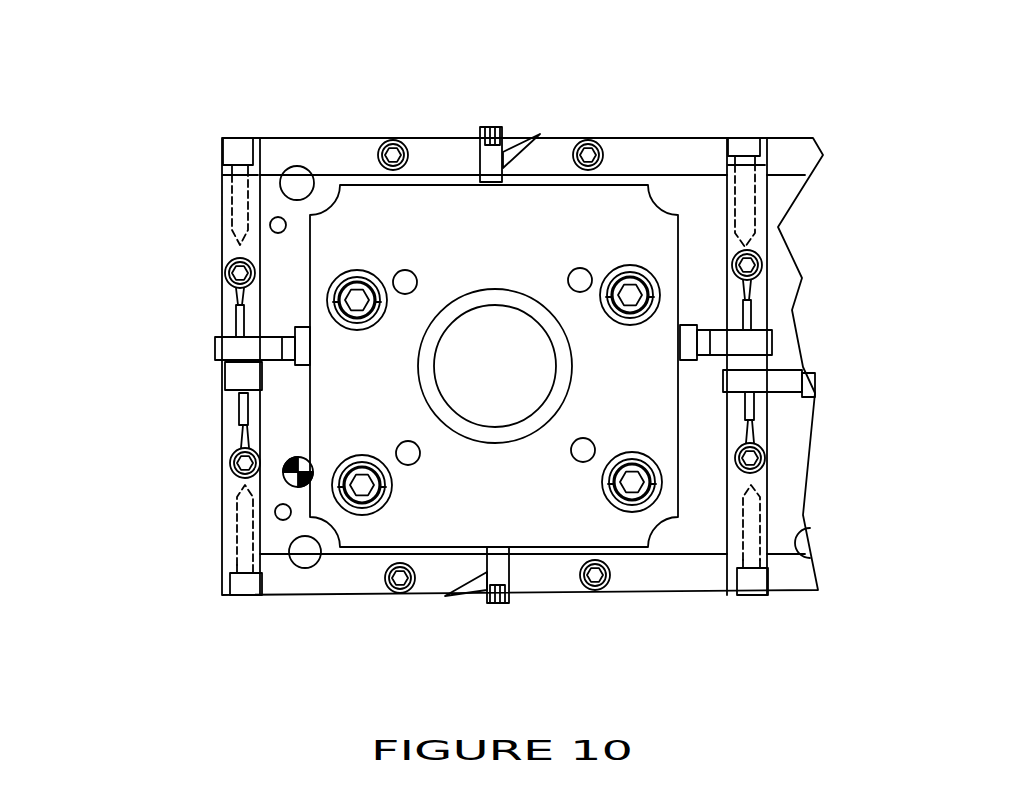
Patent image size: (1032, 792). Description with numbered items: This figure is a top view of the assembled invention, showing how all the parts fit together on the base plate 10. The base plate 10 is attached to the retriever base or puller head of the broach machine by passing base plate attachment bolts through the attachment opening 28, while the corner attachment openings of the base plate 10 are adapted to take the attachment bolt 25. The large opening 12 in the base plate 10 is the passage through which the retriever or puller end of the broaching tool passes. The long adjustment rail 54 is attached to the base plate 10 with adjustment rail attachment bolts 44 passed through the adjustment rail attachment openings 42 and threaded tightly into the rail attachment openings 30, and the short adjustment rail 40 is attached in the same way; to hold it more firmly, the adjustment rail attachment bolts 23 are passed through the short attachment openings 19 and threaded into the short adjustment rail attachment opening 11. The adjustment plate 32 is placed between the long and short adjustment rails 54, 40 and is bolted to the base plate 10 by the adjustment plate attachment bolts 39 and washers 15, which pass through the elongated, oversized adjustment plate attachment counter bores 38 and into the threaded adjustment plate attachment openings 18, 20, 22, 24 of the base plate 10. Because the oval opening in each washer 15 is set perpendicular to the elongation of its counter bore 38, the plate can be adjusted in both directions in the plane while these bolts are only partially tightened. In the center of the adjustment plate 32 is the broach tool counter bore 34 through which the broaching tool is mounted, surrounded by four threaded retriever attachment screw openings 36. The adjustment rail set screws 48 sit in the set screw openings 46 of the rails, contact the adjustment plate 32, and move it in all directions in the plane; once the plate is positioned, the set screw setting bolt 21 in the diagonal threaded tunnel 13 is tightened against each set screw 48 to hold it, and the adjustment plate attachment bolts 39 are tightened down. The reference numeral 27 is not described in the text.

The base plate 10 is at (705, 512).
The short adjustment rail attachment opening 11 is at (228, 205).
The large opening 12 is at (495, 366).
The threaded tunnel 13 is at (512, 148).
The washer 15 is at (357, 292).
The adjustment plate attachment opening 18 is at (608, 294).
The short attachment opening 19 is at (256, 168).
The adjustment plate attachment opening 20 is at (615, 487).
The set screw setting bolt 21 is at (512, 150).
The adjustment plate attachment opening 22 is at (372, 488).
The adjustment rail attachment bolt 23 is at (237, 150).
The adjustment plate attachment opening 24 is at (372, 306).
The attachment bolt 25 is at (272, 219).
The datum target 27 is at (290, 476).
The attachment opening 28 is at (295, 166).
The rail attachment opening 30 is at (385, 147).
The adjustment plate 32 is at (378, 530).
The broach tool counter bore 34 is at (570, 366).
The retriever attachment screw opening 36 is at (417, 282).
The adjustment plate attachment counter bore 38 is at (340, 272).
The adjustment plate attachment bolt 39 is at (368, 290).
The short adjustment rail 40 is at (233, 522).
The adjustment rail attachment opening 42 is at (390, 140).
The adjustment rail attachment bolt 44 is at (398, 142).
The set screw opening 46 is at (482, 132).
The adjustment rail set screw 48 is at (491, 126).
The long adjustment rail 54 is at (690, 148).